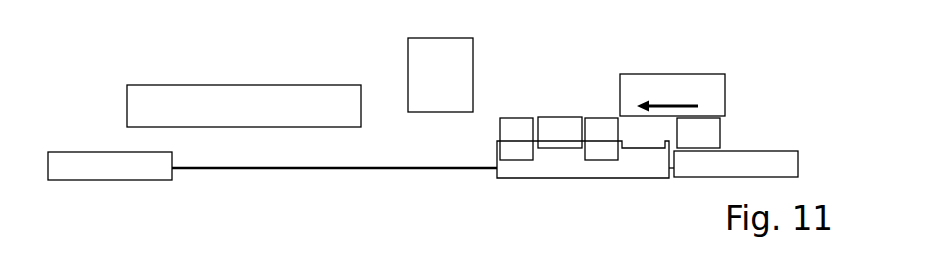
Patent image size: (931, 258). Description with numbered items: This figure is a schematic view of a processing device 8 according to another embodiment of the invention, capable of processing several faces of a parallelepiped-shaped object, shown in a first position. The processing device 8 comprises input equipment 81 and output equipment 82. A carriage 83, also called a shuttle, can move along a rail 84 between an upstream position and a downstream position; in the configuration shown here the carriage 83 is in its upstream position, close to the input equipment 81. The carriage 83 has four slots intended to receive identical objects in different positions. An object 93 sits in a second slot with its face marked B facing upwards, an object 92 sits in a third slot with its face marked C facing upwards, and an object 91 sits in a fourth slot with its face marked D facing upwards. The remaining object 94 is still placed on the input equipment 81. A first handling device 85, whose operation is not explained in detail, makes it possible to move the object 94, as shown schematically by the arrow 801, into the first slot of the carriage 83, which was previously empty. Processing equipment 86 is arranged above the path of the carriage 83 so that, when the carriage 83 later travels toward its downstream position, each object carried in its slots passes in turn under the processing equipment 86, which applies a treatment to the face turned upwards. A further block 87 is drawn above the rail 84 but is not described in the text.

The processing device 8 is at (197, 61).
The input equipment 81 is at (752, 163).
The output equipment 82 is at (110, 165).
The carriage 83 is at (553, 172).
The rail 84 is at (368, 168).
The first handling device 85 is at (660, 85).
The processing equipment 86 is at (457, 75).
The control unit 87 is at (237, 103).
The object 91 is at (523, 150).
The object 92 is at (560, 145).
The object 93 is at (608, 152).
The object 94 is at (710, 125).
The arrow 801 is at (677, 98).